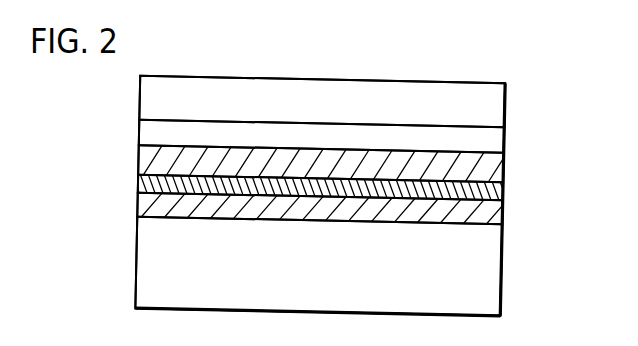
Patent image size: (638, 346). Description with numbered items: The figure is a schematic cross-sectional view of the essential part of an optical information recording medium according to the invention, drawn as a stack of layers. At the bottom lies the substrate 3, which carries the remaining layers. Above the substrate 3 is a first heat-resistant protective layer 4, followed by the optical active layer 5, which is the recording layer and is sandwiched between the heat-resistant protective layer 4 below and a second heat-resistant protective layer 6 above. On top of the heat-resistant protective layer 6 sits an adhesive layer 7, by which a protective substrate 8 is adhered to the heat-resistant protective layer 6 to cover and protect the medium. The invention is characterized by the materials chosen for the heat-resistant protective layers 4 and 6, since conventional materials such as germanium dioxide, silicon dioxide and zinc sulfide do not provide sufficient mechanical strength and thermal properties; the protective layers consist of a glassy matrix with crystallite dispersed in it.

The substrate 3 is at (487, 273).
The heat-resistant protective layer 4 is at (490, 215).
The optical active layer 5 is at (490, 192).
The heat-resistant protective layer 6 is at (490, 167).
The adhesive layer 7 is at (490, 138).
The protective substrate 8 is at (490, 101).